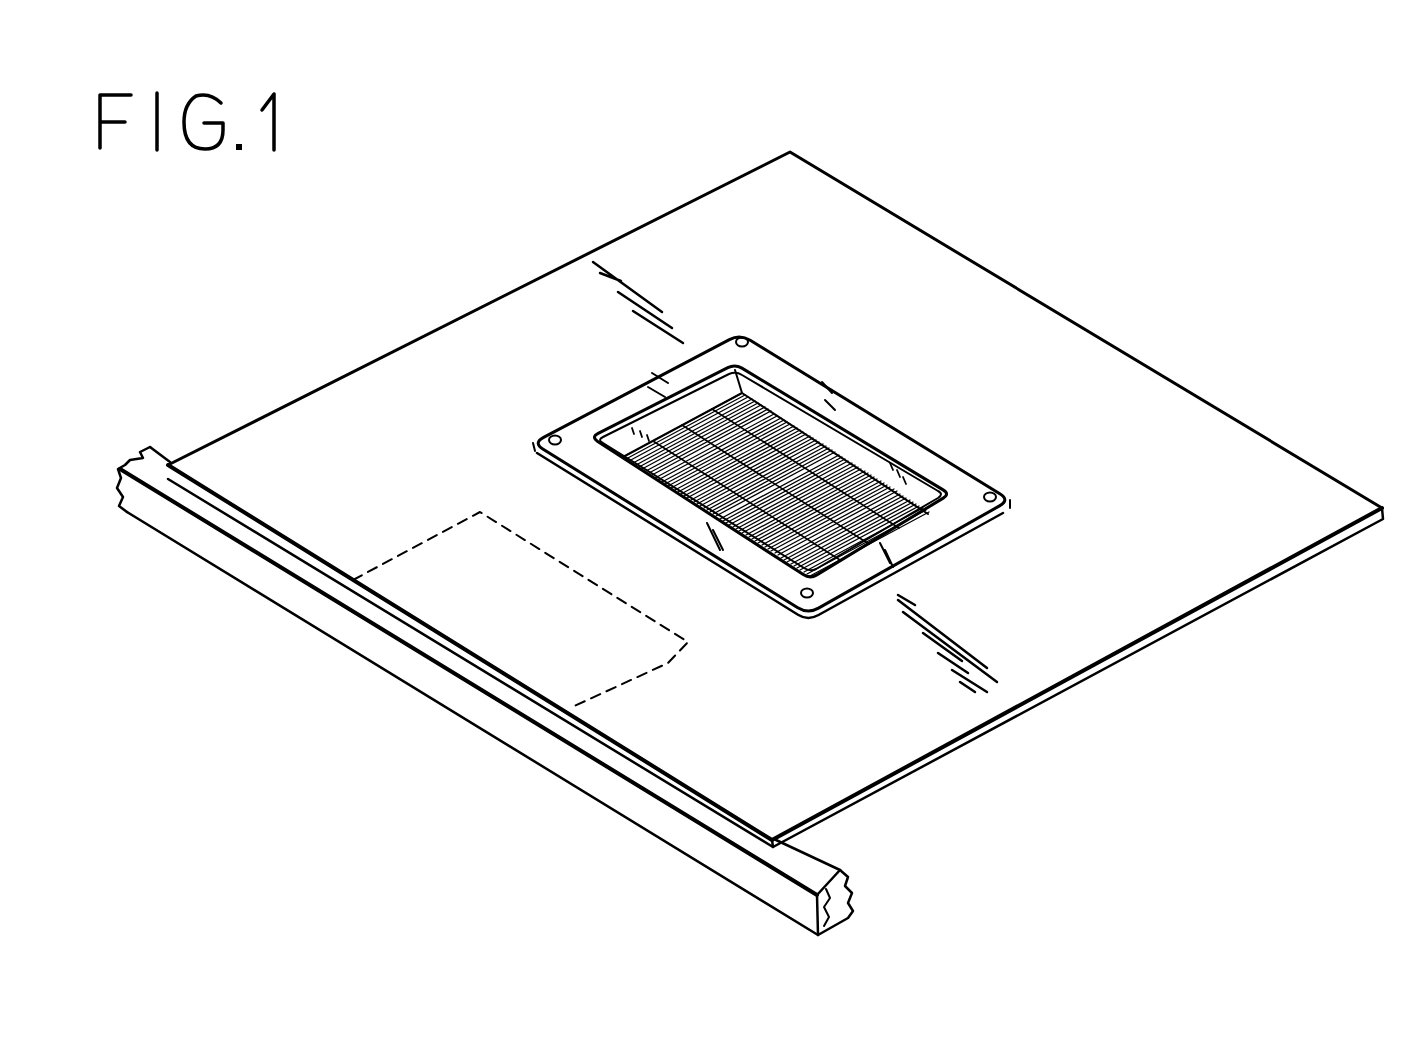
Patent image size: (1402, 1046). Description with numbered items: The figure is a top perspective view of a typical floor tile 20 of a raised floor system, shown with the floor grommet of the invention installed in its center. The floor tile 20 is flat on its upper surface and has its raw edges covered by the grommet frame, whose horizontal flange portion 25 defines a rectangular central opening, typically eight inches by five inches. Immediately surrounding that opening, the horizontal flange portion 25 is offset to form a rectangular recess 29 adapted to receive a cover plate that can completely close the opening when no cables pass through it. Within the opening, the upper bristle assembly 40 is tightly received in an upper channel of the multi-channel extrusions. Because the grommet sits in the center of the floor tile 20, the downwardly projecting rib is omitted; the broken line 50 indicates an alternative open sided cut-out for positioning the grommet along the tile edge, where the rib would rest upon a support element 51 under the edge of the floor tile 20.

The floor tile 20 is at (970, 307).
The horizontal flange portion 25 is at (952, 480).
The rectangular recess 29 is at (775, 398).
The upper bristle assembly 40 is at (840, 475).
The open sided cut-out 50 is at (668, 663).
The support element 51 is at (812, 874).